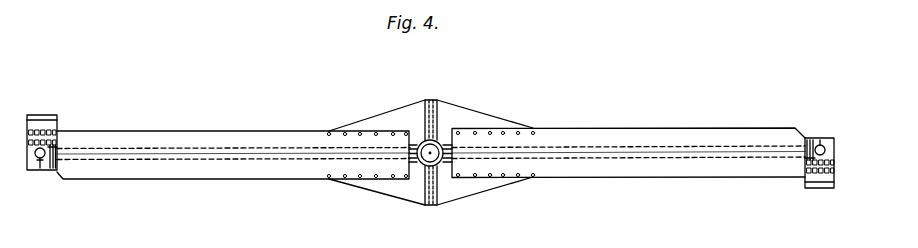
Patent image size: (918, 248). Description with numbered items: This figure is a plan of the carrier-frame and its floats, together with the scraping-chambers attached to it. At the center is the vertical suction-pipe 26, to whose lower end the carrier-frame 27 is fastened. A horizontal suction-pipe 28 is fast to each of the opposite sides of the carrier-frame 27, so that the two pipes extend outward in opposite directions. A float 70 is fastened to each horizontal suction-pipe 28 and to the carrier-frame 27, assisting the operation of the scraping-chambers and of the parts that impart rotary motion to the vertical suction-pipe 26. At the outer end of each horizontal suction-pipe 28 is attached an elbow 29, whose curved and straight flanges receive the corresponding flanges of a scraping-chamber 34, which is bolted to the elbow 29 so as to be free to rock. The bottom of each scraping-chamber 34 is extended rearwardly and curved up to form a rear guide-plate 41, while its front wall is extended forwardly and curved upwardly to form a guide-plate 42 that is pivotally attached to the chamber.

The vertical suction-pipe 26 is at (438, 145).
The carrier-frame 27 is at (452, 192).
The horizontal suction-pipe 28 is at (213, 155).
The elbow 29 is at (40, 168).
The scraping-chamber 34 is at (27, 148).
The rear guide-plate 41 is at (53, 170).
The guide-plate 42 is at (53, 117).
The float 70 is at (287, 172).